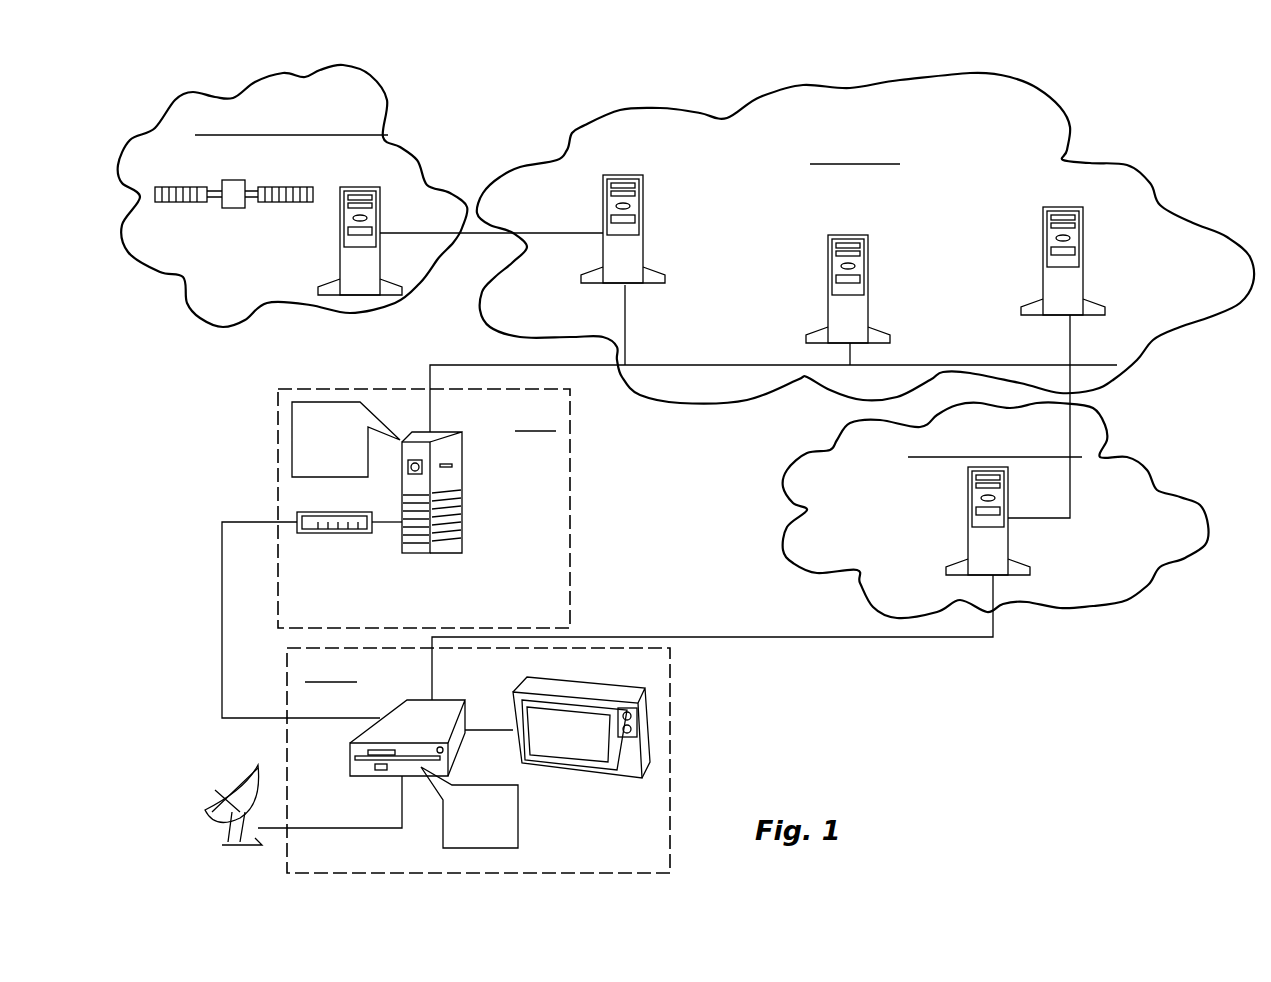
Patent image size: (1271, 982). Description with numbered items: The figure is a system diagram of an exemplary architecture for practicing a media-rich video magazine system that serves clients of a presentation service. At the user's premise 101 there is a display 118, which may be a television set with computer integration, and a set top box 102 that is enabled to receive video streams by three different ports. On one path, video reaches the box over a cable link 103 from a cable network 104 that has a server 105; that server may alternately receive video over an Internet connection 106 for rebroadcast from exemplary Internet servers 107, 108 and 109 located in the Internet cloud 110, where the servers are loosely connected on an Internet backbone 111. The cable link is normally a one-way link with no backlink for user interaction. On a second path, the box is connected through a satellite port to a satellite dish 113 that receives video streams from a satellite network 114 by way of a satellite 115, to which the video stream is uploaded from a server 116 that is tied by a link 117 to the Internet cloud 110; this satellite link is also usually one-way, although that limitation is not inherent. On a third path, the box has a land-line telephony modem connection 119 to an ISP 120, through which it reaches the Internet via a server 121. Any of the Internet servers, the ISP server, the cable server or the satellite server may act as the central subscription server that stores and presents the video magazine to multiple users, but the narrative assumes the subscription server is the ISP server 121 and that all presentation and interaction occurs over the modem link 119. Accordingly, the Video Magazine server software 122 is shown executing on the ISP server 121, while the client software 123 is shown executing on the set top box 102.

The user's premise 101 is at (682, 763).
The set top box 102 is at (350, 762).
The cable link 103 is at (815, 637).
The cable network 104 is at (1174, 480).
The server 105 is at (968, 545).
The Internet connection 106 is at (1073, 483).
The Internet server 107 is at (1086, 232).
The Internet server 108 is at (870, 278).
The Internet server 109 is at (645, 227).
The Internet cloud 110 is at (1120, 147).
The Internet backbone 111 is at (760, 363).
The satellite dish 113 is at (213, 805).
The satellite network 114 is at (266, 330).
The satellite 115 is at (235, 210).
The server 116 is at (340, 222).
The link 117 is at (513, 230).
The display 118 is at (580, 776).
The land-line telephony modem connection 119 is at (222, 645).
The ISP 120 is at (585, 547).
The server 121 is at (462, 497).
The server software 122 is at (292, 457).
The client software 123 is at (518, 800).